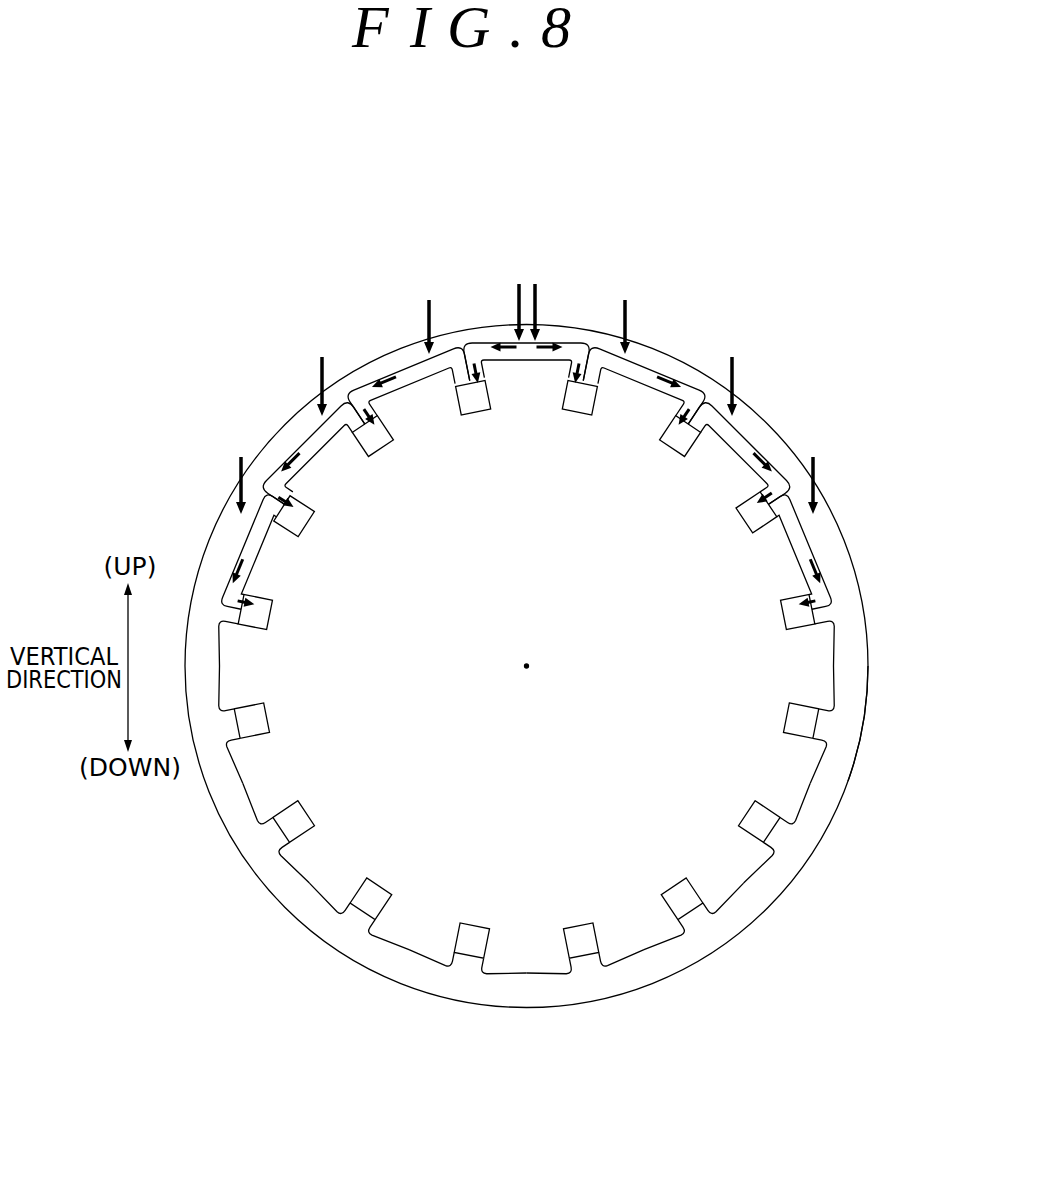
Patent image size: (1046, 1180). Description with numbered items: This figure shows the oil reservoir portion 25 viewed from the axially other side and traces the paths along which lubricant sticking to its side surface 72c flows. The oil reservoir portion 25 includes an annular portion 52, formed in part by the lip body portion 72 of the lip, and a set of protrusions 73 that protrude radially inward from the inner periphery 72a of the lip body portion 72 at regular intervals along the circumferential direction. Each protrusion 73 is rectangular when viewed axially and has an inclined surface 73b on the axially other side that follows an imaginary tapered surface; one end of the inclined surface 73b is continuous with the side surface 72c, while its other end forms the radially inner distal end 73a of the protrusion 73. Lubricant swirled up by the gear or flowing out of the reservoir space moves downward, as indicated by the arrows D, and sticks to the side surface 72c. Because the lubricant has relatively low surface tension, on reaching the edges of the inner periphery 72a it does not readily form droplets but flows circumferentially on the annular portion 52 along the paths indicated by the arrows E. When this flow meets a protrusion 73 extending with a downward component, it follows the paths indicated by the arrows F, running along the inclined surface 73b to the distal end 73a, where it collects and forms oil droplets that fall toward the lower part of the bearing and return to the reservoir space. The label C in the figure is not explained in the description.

The oil reservoir portion 25 is at (302, 935).
The annular portion 52 is at (603, 349).
The lip body portion 72 is at (526, 582).
The inner periphery of the lip body portion 72a is at (313, 457).
The side surface of the lip body portion on the axially other side 72c is at (823, 795).
The protrusion 73 is at (526, 510).
The distal end of the protrusion 73a is at (266, 610).
The inclined surface of the protrusion 73b is at (245, 596).
The center axis C is at (530, 660).
The arrows indicating downward flow of lubricant D is at (813, 457).
The arrows indicating circumferential flow paths E is at (803, 527).
The arrows indicating flow paths on the protrusions F is at (822, 598).